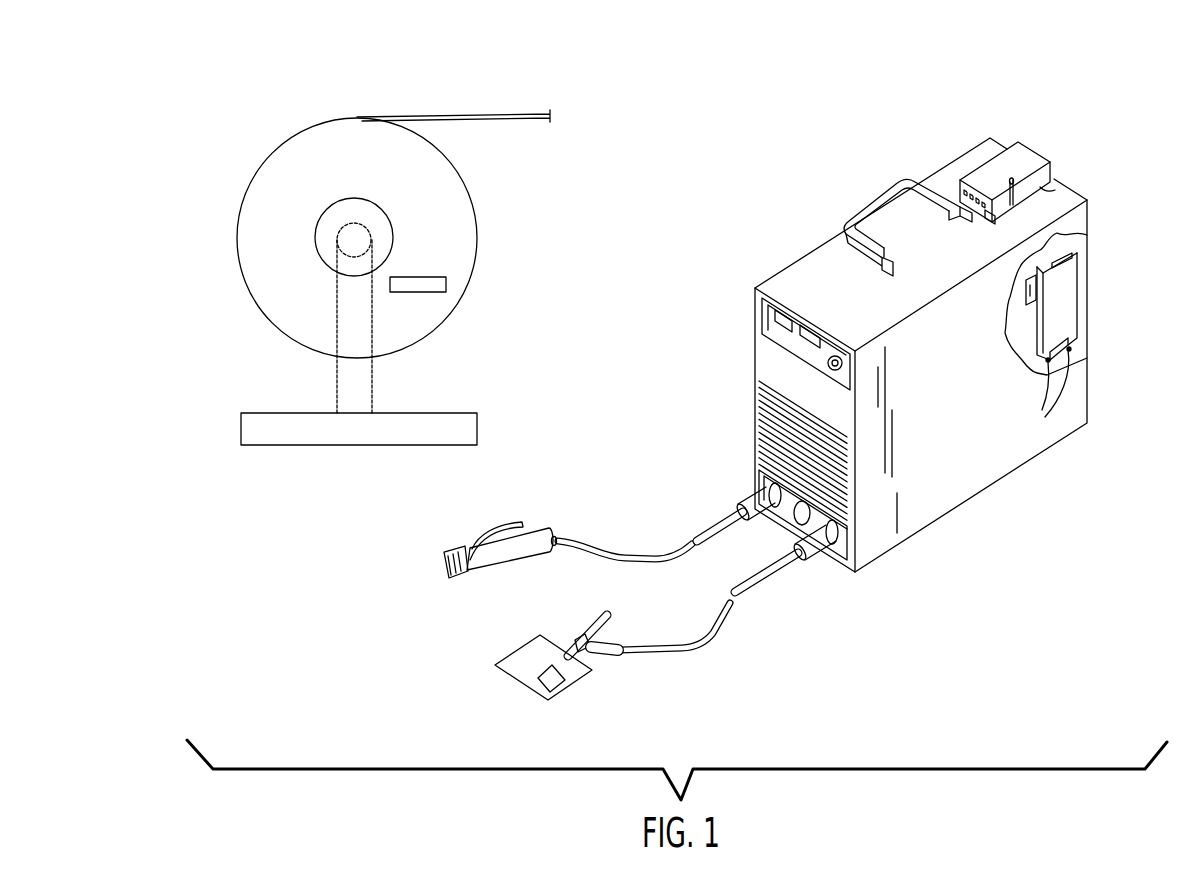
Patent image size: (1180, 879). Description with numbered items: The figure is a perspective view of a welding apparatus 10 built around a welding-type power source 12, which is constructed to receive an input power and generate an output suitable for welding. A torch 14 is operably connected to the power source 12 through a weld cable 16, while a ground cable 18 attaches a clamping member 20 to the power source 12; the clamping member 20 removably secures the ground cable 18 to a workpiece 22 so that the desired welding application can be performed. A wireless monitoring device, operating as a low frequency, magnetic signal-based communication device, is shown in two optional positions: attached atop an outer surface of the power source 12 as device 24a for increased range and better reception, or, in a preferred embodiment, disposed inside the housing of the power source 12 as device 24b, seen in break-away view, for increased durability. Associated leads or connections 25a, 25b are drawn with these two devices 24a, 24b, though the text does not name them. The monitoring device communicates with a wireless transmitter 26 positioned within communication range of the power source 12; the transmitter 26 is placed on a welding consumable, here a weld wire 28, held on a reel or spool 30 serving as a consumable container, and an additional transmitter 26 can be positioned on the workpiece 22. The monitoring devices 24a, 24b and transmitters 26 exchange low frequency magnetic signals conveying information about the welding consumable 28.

The welding apparatus 10 is at (719, 184).
The power source 12 is at (977, 394).
The torch 14 is at (535, 542).
The weld cable 16 is at (613, 555).
The ground cable 18 is at (690, 645).
The clamping member 20 is at (598, 623).
The workpiece 22 is at (527, 675).
The wireless monitoring device 24a is at (1036, 149).
The wireless monitoring device 24b is at (1082, 294).
The first connector cable 25a is at (1043, 188).
The second connector cables 25b is at (1050, 411).
The wireless transmitter 26 is at (567, 690).
The weld wire 28 is at (507, 112).
The spool 30 is at (238, 243).